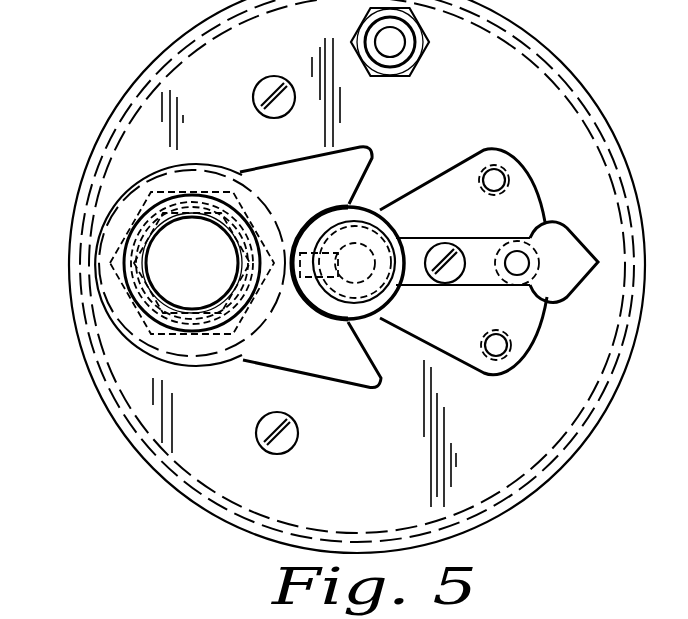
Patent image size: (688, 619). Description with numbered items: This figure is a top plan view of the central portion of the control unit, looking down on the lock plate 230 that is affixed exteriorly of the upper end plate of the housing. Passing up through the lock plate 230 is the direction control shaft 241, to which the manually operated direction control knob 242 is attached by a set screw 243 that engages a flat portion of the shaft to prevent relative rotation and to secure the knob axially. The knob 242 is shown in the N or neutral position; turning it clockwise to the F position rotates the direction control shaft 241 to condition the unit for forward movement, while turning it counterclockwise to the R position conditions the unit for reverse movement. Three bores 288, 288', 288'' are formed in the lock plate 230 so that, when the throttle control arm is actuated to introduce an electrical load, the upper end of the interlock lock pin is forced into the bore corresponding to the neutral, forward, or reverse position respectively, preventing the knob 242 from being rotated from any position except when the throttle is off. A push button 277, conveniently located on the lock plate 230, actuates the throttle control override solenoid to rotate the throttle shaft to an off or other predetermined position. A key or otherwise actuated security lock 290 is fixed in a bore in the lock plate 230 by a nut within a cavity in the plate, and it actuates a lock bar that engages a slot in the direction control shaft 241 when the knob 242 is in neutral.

The lock plate 230 is at (507, 93).
The direction control shaft 241 is at (364, 248).
The direction control knob 242 is at (424, 284).
The set screw 243 is at (313, 257).
The push button 277 is at (385, 39).
The bore 288 is at (545, 288).
The bore 288' is at (493, 154).
The bore 288'' is at (507, 372).
The security lock 290 is at (157, 260).